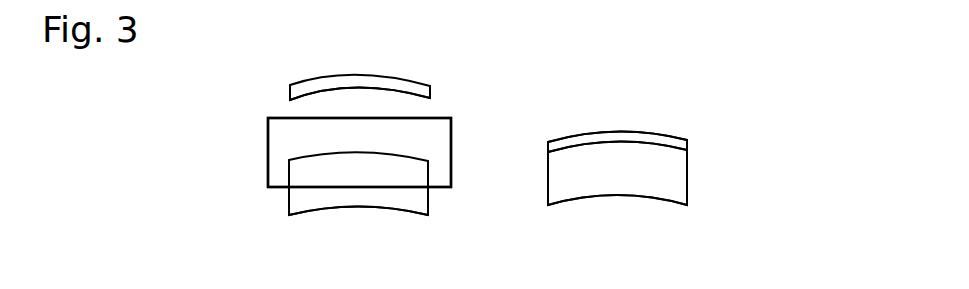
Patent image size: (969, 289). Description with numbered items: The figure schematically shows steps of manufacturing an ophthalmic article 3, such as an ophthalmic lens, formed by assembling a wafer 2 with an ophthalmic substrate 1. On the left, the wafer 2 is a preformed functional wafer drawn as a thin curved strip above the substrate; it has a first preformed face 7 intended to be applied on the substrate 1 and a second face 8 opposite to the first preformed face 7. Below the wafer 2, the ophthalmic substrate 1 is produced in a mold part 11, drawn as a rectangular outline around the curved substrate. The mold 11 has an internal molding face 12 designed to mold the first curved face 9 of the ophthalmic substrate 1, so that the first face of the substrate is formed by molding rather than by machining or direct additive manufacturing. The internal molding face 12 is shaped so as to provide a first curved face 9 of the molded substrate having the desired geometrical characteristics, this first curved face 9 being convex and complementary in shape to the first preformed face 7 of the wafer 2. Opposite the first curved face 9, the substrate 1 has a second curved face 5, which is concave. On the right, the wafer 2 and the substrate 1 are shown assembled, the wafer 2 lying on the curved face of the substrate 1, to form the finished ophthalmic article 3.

The ophthalmic substrate 1 is at (243, 183).
The wafer 2 is at (272, 88).
The ophthalmic article 3 is at (708, 180).
The second curved face 5 is at (332, 208).
The first preformed face 7 is at (318, 92).
The second face 8 is at (300, 82).
The first desired curved surface 9 is at (380, 152).
The mold part 11 is at (289, 167).
The internal molding face 12 is at (390, 156).